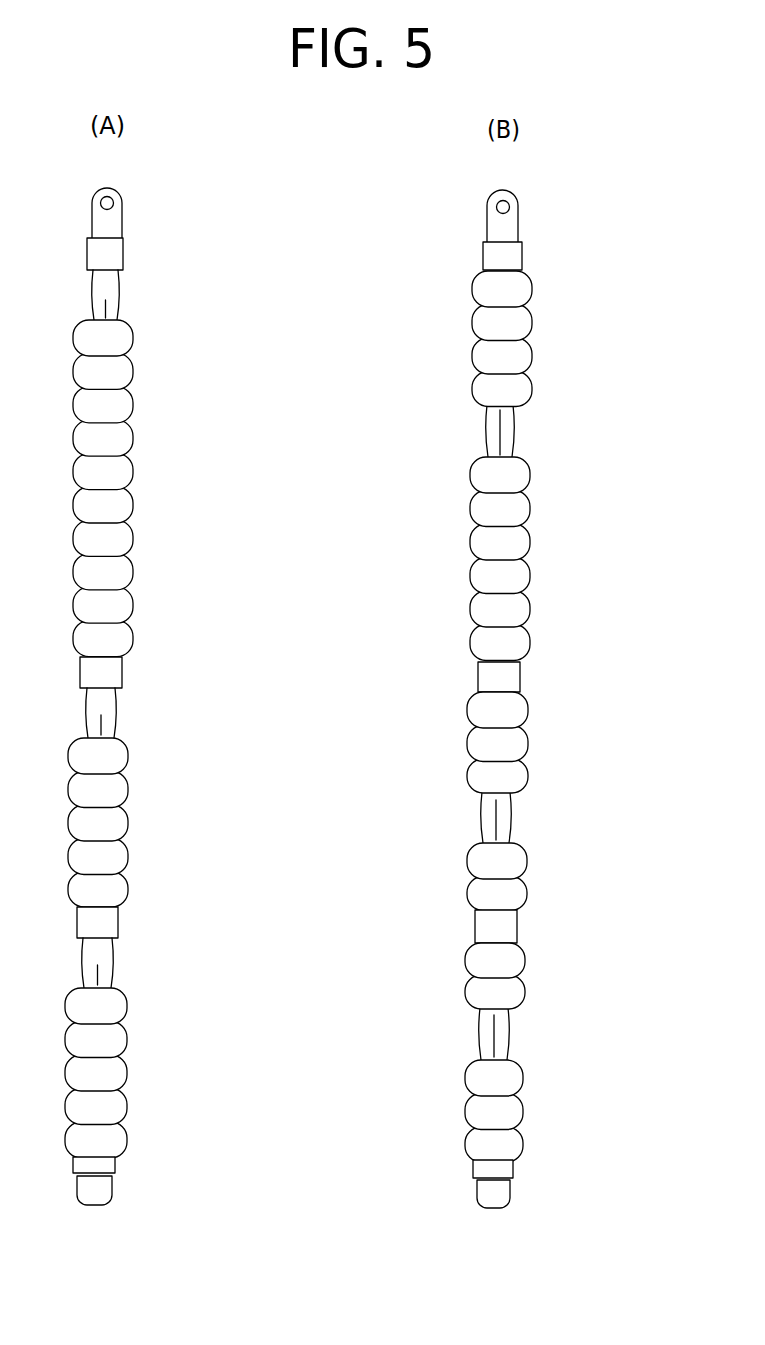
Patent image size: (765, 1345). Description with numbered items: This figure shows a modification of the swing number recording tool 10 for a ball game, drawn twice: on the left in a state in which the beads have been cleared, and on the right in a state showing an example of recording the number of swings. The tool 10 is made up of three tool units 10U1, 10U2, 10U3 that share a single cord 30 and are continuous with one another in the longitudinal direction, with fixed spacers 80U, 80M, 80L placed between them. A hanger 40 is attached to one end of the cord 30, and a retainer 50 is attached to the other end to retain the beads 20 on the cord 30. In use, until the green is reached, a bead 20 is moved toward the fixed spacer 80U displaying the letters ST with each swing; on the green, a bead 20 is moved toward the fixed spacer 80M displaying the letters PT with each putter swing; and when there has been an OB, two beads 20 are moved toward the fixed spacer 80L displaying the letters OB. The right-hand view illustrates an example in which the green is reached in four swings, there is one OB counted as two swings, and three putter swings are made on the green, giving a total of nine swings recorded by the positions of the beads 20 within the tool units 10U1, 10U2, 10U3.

The swing number recording tool 10 is at (173, 195).
The hanger 40 is at (108, 223).
The fixed spacer displaying ST 80U is at (123, 250).
The cord 30 is at (108, 292).
The first tool unit 10U1 is at (135, 428).
The bead 20 is at (113, 510).
The fixed spacer displaying PT 80M is at (122, 670).
The second tool unit 10U2 is at (128, 748).
The fixed spacer displaying OB 80L is at (118, 920).
The third tool unit 10U3 is at (180, 980).
The retainer 50 is at (100, 1193).